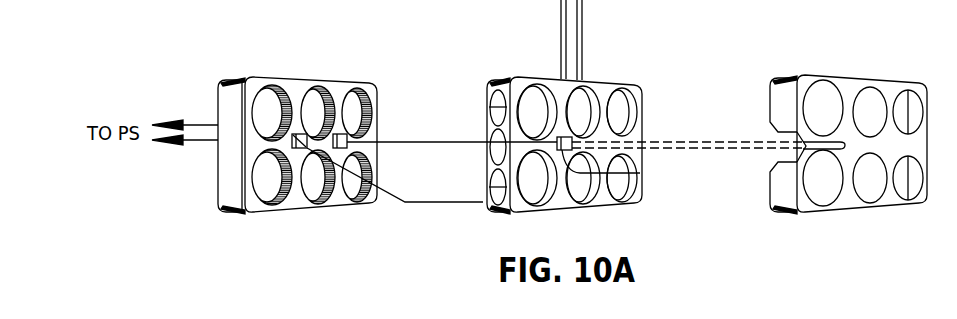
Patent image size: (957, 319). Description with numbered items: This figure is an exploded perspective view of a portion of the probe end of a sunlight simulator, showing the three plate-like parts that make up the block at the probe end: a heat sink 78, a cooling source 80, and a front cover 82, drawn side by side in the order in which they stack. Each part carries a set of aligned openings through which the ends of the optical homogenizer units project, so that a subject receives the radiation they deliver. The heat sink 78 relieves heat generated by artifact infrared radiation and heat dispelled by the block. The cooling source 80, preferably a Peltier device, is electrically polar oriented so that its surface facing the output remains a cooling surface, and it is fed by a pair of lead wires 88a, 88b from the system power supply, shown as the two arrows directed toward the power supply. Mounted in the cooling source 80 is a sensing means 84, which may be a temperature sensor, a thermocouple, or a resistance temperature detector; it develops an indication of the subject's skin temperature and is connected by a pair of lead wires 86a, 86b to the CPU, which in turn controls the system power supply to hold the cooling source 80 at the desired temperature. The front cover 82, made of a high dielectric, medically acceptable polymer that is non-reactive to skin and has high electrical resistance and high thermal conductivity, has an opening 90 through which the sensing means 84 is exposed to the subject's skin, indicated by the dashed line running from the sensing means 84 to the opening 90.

The heat sink 78 is at (313, 77).
The cooling source 80 is at (617, 81).
The front cover 82 is at (865, 76).
The sensing means 84 is at (640, 173).
The lead wire 86a is at (583, 12).
The lead wire 86b is at (560, 12).
The lead wire 88a is at (202, 125).
The lead wire 88b is at (202, 140).
The opening 90 is at (848, 146).